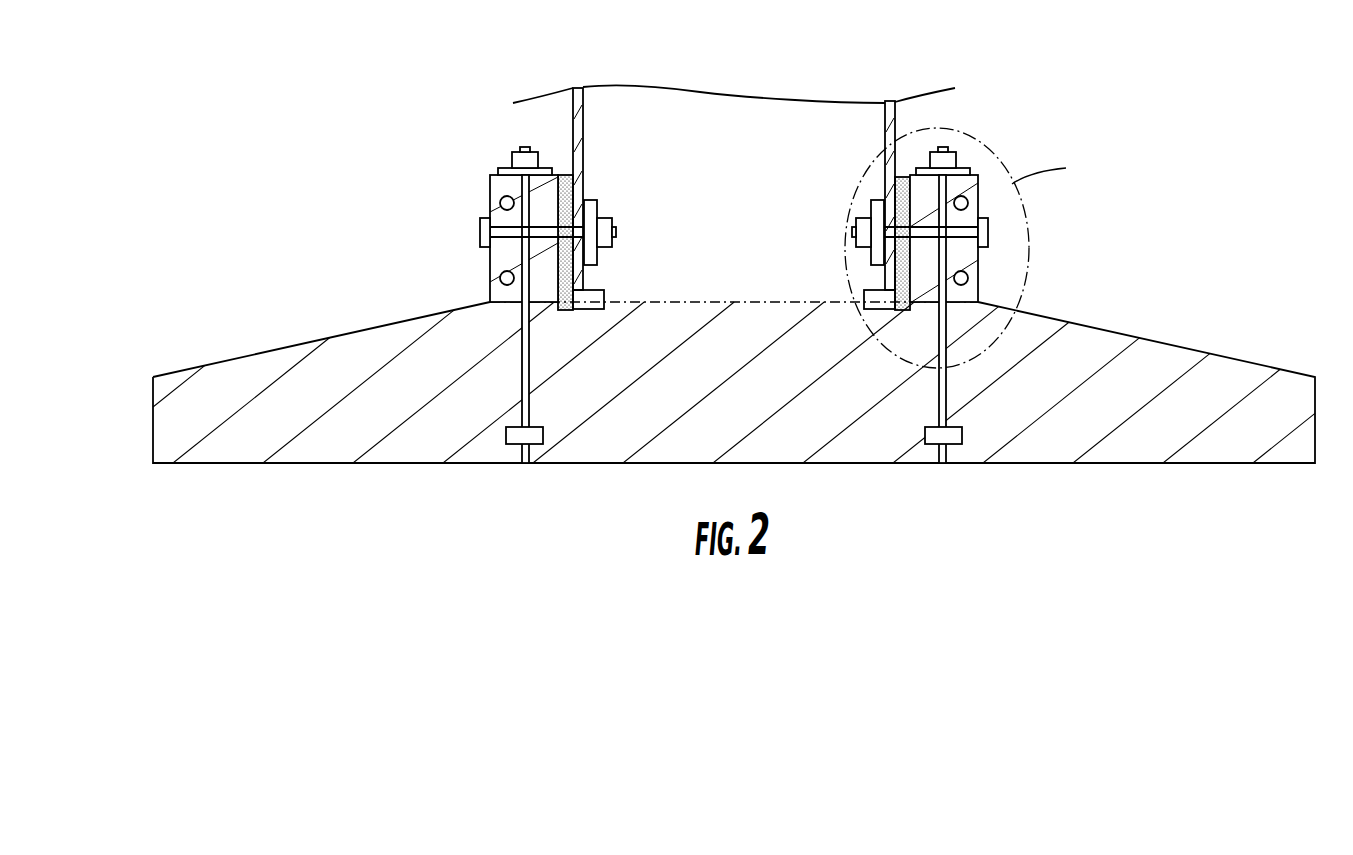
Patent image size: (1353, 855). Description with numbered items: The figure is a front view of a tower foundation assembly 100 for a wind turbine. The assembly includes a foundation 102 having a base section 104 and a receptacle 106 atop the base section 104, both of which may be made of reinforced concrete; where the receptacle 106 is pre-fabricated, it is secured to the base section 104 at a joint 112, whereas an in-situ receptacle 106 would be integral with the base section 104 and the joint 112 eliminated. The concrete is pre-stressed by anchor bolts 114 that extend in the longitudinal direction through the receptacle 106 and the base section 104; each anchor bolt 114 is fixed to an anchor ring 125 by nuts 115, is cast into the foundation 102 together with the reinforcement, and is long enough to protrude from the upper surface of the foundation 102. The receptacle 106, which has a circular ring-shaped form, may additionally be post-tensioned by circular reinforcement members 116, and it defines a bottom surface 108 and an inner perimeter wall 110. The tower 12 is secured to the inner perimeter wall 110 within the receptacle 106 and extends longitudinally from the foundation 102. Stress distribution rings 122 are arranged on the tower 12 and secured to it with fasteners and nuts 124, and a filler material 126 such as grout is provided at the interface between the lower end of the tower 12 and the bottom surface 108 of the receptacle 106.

The tower foundation assembly 100 is at (276, 104).
The foundation 102 is at (380, 267).
The base section 104 is at (303, 342).
The receptacle 106 is at (492, 192).
The bottom surface 108 is at (703, 300).
The inner perimeter wall 110 is at (562, 198).
The joint 112 is at (510, 302).
The anchor bolts 114 is at (541, 370).
The nuts 115 is at (512, 158).
The circular reinforcement members 116 is at (970, 278).
The stress distribution rings 122 is at (604, 201).
The nuts 124 is at (609, 255).
The anchor ring 125 is at (975, 446).
The filler material 126 is at (568, 305).
The tower 12 is at (903, 126).